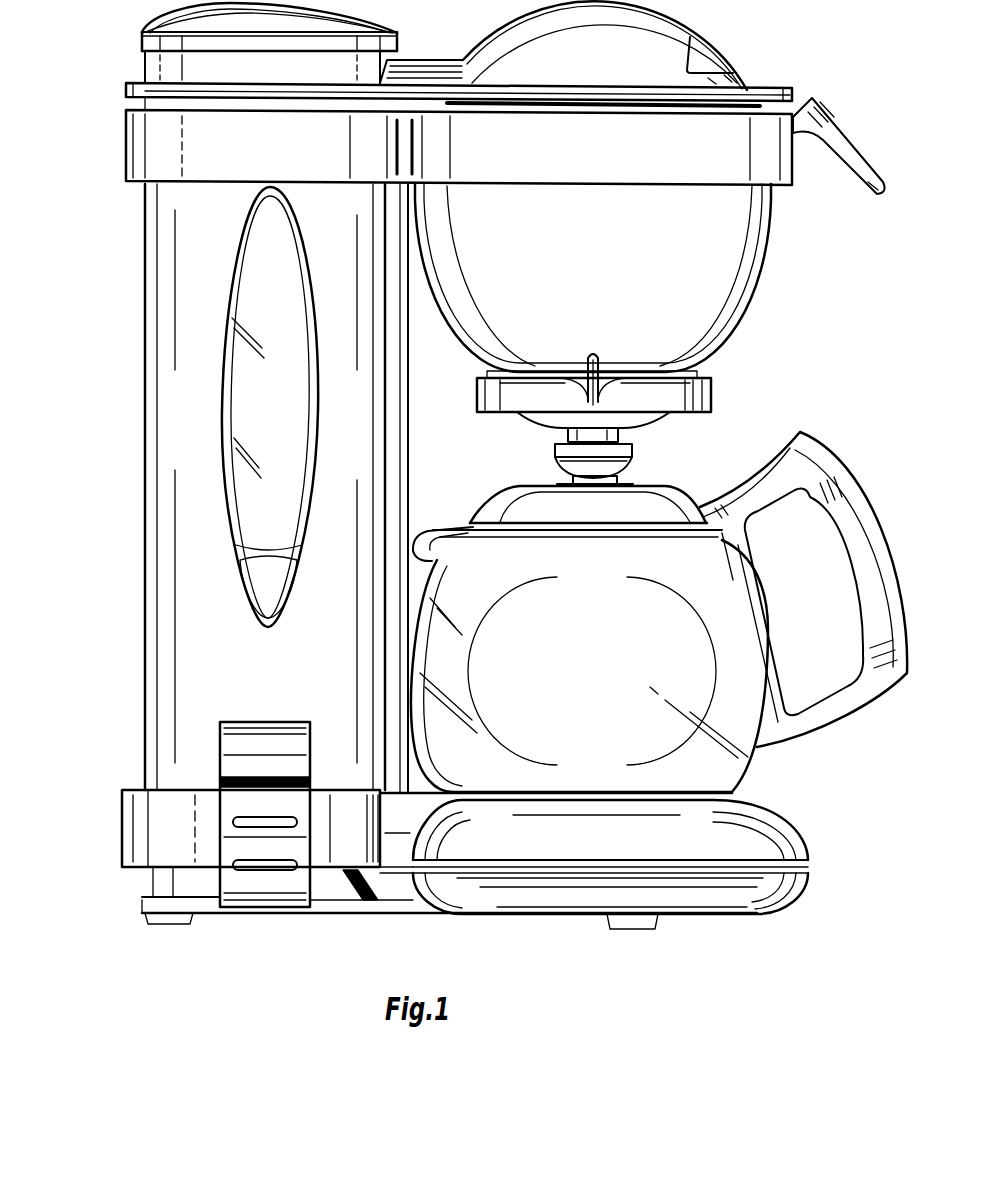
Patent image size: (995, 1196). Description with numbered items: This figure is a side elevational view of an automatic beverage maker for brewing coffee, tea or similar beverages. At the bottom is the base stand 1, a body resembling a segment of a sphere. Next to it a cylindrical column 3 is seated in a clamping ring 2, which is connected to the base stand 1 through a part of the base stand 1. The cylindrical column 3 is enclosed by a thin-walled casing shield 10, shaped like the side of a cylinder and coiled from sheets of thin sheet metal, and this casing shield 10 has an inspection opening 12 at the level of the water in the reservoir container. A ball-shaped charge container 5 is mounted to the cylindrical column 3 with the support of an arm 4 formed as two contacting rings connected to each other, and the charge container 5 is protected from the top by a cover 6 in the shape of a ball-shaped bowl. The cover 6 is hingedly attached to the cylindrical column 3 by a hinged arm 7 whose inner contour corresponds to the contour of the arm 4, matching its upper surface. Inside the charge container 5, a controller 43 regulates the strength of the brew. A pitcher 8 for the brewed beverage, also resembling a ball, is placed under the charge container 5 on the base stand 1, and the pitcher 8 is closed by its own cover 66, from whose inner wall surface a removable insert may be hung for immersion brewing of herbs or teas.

The base stand 1 is at (760, 849).
The clamping ring 2 is at (137, 834).
The cylindrical column 3 is at (158, 631).
The arm 4 is at (137, 152).
The charge container 5 is at (752, 283).
The cover 6 is at (626, 75).
The hinged arm 7 is at (428, 78).
The pitcher 8 is at (577, 667).
The thin-walled casing shield 10 is at (168, 458).
The inspection opening 12 is at (292, 358).
The controller 43 is at (642, 390).
The cover 66 is at (530, 497).